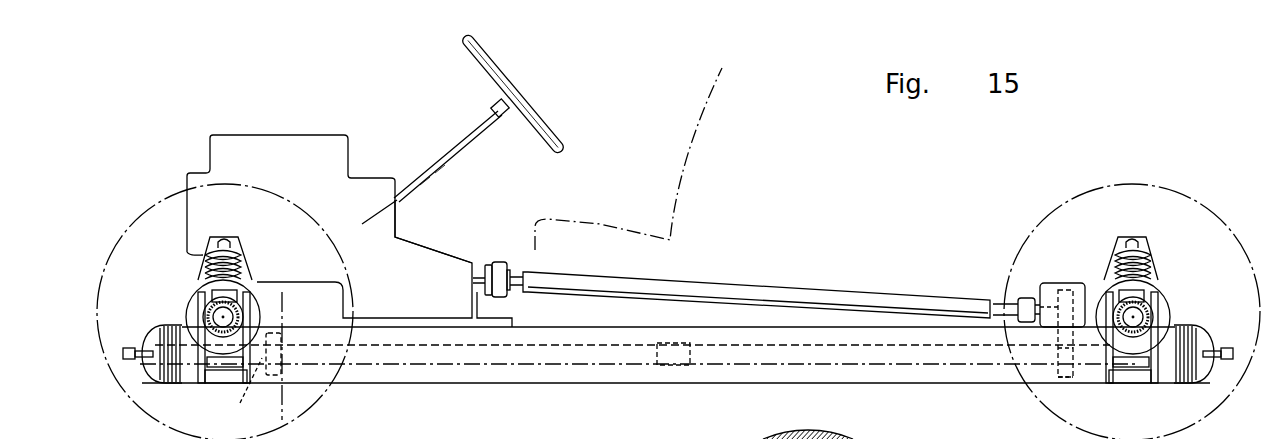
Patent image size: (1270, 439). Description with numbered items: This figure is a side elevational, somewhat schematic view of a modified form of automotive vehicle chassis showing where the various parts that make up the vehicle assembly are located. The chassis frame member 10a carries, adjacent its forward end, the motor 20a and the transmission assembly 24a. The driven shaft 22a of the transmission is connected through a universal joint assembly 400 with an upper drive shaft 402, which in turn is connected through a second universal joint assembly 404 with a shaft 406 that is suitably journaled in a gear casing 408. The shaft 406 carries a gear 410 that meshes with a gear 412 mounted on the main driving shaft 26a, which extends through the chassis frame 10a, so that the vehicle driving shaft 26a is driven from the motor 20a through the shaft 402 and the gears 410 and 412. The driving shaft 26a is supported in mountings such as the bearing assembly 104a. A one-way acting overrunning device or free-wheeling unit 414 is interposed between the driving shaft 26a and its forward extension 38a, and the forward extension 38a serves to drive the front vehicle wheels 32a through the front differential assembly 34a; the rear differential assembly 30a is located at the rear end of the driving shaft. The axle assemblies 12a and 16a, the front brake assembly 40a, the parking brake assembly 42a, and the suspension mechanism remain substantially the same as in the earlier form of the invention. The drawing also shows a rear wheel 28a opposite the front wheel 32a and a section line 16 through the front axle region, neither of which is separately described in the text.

The chassis frame member 10a is at (607, 386).
The axle assembly 12a is at (204, 317).
The section line 16 is at (259, 308).
The axle assembly 16a is at (1152, 317).
The motor 20a is at (312, 136).
The driven shaft of the transmission 22a is at (478, 273).
The transmission assembly 24a is at (426, 247).
The driving shaft 26a is at (927, 366).
The rear wheel 28a is at (1212, 213).
The rear differential assembly 30a is at (1177, 299).
The front vehicle wheels 32a is at (157, 204).
The front differential assembly 34a is at (184, 300).
The forward extension of the driving shaft 38a is at (237, 390).
The front brake assembly 40a is at (152, 328).
The parking brake assembly 42a is at (1197, 339).
The bearing assembly 104a is at (693, 369).
The universal joint assembly 400 is at (505, 297).
The upper drive shaft 402 is at (717, 286).
The universal joint assembly 404 is at (1026, 297).
The shaft 406 is at (1053, 316).
The gear casing 408 is at (1068, 283).
The gear 410 is at (1078, 300).
The gear 412 is at (1066, 380).
The one-way acting overrunning device or free-wheeling unit 414 is at (286, 338).